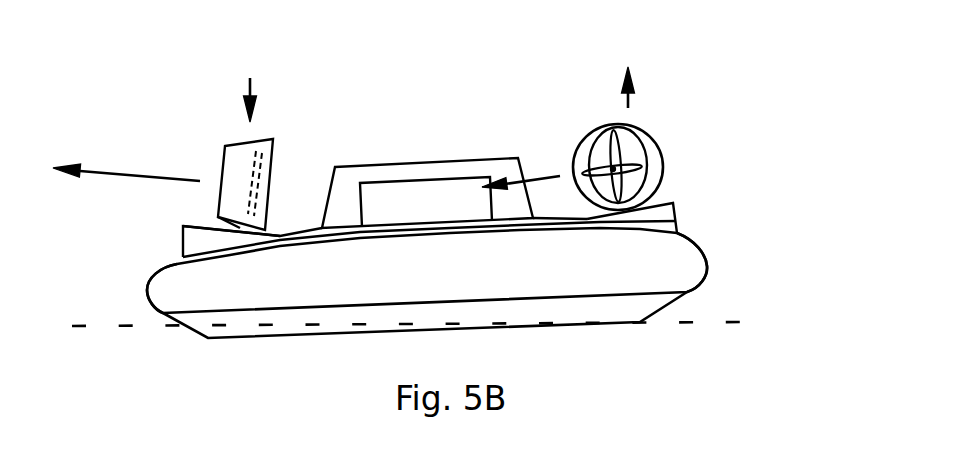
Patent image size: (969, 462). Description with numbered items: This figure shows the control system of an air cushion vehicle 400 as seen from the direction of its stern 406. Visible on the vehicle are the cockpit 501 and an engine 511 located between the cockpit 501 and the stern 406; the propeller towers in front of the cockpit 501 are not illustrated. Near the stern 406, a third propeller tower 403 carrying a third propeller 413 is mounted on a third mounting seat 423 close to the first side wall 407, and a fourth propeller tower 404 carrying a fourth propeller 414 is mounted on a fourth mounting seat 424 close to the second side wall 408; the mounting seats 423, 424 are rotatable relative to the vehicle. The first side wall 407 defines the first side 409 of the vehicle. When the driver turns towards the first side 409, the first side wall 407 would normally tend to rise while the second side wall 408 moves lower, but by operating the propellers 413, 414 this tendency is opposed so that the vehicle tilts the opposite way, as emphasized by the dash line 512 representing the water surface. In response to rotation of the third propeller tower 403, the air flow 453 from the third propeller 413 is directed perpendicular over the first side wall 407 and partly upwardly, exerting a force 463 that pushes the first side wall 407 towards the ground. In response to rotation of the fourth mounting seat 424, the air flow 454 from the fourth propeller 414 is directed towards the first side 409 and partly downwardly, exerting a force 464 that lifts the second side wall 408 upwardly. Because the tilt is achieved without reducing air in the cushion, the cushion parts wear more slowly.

The air cushion vehicle 400 is at (602, 306).
The third propeller tower 403 is at (220, 143).
The third propeller 413 is at (189, 139).
The fourth propeller tower 404 is at (647, 145).
The fourth propeller 414 is at (660, 165).
The stern 406 is at (440, 283).
The first side wall 407 is at (148, 288).
The second side wall 408 is at (707, 265).
The first side 409 is at (107, 308).
The third mounting seat 423 is at (182, 242).
The fourth mounting seat 424 is at (677, 208).
The air flow 453 is at (107, 168).
The air flow 454 is at (537, 173).
The force 463 is at (245, 78).
The force 464 is at (623, 62).
The cockpit 501 is at (358, 166).
The engine 511 is at (438, 197).
The dash line 512 is at (222, 322).